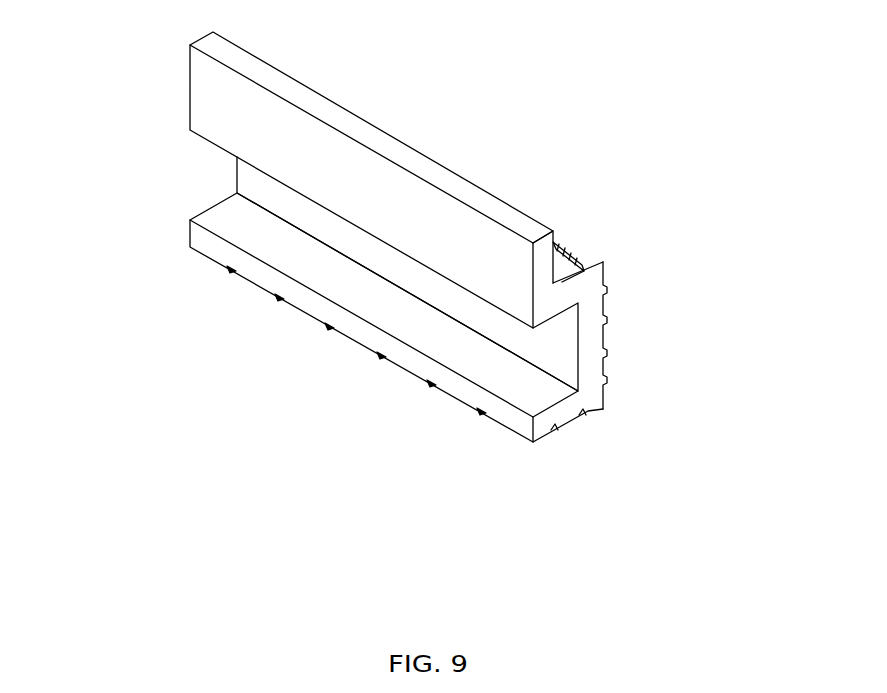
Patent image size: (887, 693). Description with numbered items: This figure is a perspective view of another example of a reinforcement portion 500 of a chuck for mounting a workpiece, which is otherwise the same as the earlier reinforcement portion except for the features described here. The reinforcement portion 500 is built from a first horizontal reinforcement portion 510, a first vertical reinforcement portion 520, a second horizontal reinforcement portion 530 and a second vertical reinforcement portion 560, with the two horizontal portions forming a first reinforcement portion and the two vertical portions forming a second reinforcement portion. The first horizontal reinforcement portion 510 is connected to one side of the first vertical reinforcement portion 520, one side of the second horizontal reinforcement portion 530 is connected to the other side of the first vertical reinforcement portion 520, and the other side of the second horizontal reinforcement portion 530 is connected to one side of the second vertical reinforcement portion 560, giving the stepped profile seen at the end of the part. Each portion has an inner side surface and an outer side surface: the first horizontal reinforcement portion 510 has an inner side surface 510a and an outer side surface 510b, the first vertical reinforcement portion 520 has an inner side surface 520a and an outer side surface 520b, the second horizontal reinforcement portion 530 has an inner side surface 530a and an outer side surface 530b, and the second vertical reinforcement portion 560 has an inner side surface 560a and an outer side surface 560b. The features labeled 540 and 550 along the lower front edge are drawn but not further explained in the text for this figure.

The reinforcement portion 500 is at (500, 101).
The first horizontal reinforcement portion 510 is at (390, 427).
The inner side surface of the first horizontal reinforcement portion 510a is at (530, 390).
The outer side surface of the first horizontal reinforcement portion 510b is at (543, 458).
The first vertical reinforcement portion 520 is at (731, 322).
The inner side surface of the first vertical reinforcement portion 520a is at (560, 358).
The outer side surface of the first vertical reinforcement portion 520b is at (615, 325).
The second horizontal reinforcement portion 530 is at (731, 225).
The inner side surface of the second horizontal reinforcement portion 530a is at (563, 329).
The outer side surface of the second horizontal reinforcement portion 530b is at (564, 251).
The protrusions 540 is at (258, 289).
The ledge portion 550 is at (337, 331).
The second vertical reinforcement portion 560 is at (90, 22).
The inner side surface of the second vertical reinforcement portion 560a is at (210, 96).
The outer side surface of the second vertical reinforcement portion 560b is at (268, 47).